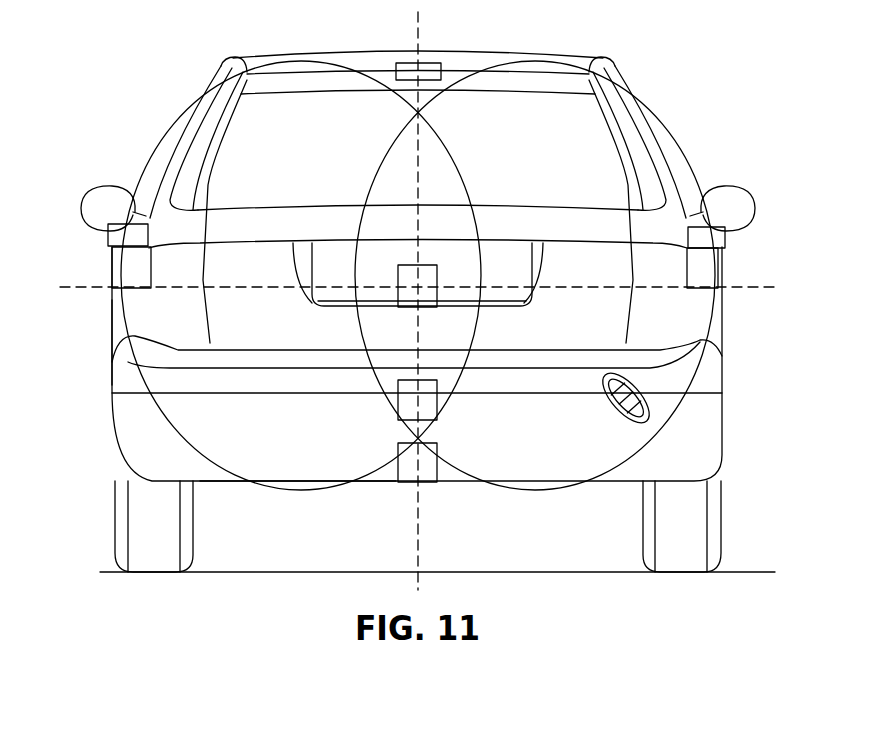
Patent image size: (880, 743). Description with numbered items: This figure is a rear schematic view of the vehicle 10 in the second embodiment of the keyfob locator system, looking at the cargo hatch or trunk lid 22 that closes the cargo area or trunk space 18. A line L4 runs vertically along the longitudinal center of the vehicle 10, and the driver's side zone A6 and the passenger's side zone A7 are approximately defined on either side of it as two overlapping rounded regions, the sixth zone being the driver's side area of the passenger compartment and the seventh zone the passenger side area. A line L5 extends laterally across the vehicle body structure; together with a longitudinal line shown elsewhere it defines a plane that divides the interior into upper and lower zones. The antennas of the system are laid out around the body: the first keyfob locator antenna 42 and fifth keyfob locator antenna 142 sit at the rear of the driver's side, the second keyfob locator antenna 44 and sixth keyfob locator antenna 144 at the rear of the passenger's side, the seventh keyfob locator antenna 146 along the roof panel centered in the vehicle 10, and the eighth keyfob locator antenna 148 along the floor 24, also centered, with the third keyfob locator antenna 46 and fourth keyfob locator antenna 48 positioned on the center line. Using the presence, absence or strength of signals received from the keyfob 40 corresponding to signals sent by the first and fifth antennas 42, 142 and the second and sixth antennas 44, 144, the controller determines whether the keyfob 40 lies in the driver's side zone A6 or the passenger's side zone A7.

The vehicle 10 is at (580, 50).
The cargo area or trunk space 18 is at (273, 330).
The cargo hatch or trunk lid 22 is at (127, 385).
The floor 24 is at (298, 480).
The keyfob 40 is at (615, 408).
The first keyfob locator antenna 42 is at (117, 237).
The second keyfob locator antenna 44 is at (718, 237).
The third keyfob locator antenna 46 is at (427, 277).
The fourth keyfob locator antenna 48 is at (428, 405).
The fifth keyfob locator antenna 142 is at (117, 275).
The sixth keyfob locator antenna 144 is at (718, 275).
The seventh keyfob locator antenna 146 is at (430, 70).
The eighth keyfob locator antenna 148 is at (408, 472).
The driver's side zone A6 is at (160, 143).
The passenger's side zone A7 is at (678, 145).
The line L4 is at (416, 18).
The line L5 is at (80, 292).